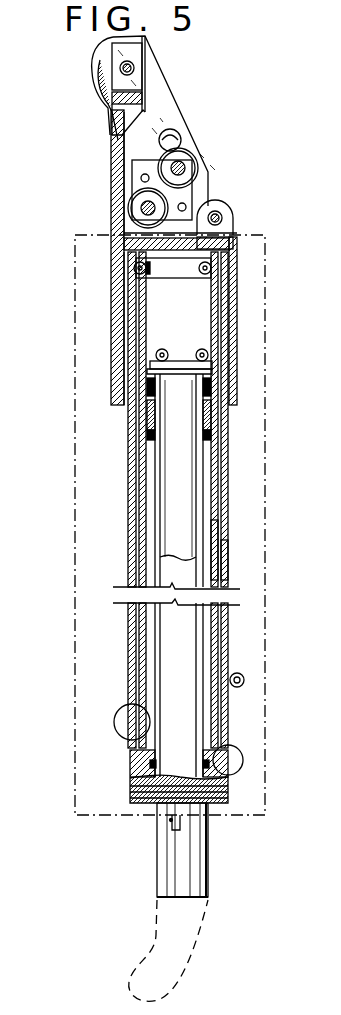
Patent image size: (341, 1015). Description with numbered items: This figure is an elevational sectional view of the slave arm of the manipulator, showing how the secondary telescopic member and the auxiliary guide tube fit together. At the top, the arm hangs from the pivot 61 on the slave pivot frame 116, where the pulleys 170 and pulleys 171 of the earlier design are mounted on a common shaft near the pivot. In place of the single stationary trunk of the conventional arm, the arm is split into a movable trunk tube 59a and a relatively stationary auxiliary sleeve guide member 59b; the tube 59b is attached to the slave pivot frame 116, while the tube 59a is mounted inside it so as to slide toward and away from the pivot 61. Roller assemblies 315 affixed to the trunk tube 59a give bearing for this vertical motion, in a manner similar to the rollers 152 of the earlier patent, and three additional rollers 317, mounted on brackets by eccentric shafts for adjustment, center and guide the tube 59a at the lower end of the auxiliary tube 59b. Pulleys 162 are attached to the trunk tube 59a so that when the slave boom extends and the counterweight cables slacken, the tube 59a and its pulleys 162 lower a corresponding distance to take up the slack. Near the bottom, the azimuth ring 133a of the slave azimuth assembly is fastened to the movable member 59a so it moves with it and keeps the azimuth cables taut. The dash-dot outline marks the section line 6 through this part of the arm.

The pivot 61 is at (180, 140).
The pulleys 170 is at (191, 166).
The pulleys 171 is at (178, 187).
The roller assemblies 315 is at (198, 273).
The slave pivot frame 116 is at (229, 307).
The rollers 152 is at (182, 352).
The section line 6 is at (265, 380).
The auxiliary sleeve guide member 59b is at (227, 549).
The movable trunk tube 59a is at (227, 567).
The rollers 317 is at (245, 675).
The pulleys 162 is at (123, 735).
The azimuth ring 133a is at (229, 800).